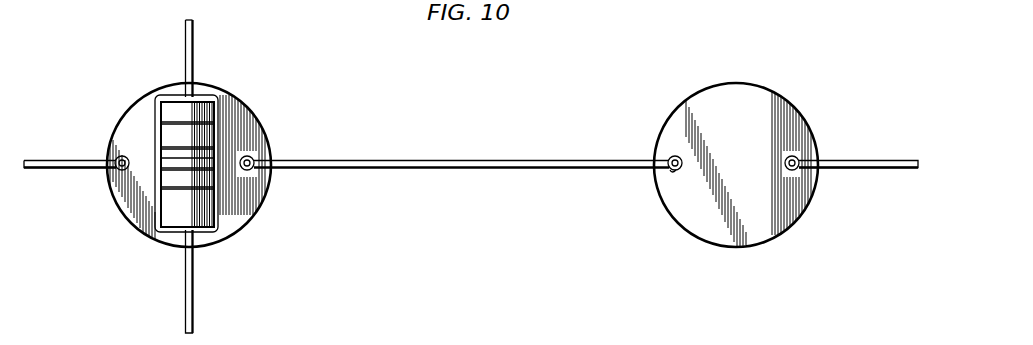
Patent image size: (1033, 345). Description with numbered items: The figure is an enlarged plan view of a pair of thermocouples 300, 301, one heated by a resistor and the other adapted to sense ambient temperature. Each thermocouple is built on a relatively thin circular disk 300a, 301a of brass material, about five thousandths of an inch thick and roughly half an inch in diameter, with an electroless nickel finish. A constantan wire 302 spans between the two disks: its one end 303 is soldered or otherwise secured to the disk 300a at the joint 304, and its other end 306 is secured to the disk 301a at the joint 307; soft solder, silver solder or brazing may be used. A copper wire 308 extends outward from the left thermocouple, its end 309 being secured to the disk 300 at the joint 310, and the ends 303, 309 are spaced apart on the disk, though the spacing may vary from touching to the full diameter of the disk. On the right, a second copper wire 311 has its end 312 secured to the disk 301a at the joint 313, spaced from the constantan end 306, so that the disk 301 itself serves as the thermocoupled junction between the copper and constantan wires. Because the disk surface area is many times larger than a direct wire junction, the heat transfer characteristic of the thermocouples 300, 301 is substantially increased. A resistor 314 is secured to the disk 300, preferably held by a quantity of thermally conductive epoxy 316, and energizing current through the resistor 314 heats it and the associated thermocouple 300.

The thermocouple 300 is at (258, 118).
The circular disk 300a is at (205, 88).
The thermocouple 301 is at (764, 84).
The circular disk 301a is at (727, 82).
The constantan wire 302 is at (424, 160).
The end of constantan wire 303 is at (254, 160).
The solder joint 304 is at (249, 176).
The other end of constantan wire 306 is at (667, 160).
The solder joint 307 is at (672, 172).
The copper wire 308 is at (35, 170).
The end of copper wire 309 is at (121, 155).
The solder joint 310 is at (118, 178).
The second copper wire 311 is at (848, 170).
The end of second copper wire 312 is at (797, 156).
The solder joint 313 is at (793, 176).
The resistor 314 is at (218, 100).
The thermally conductive epoxy 316 is at (212, 233).